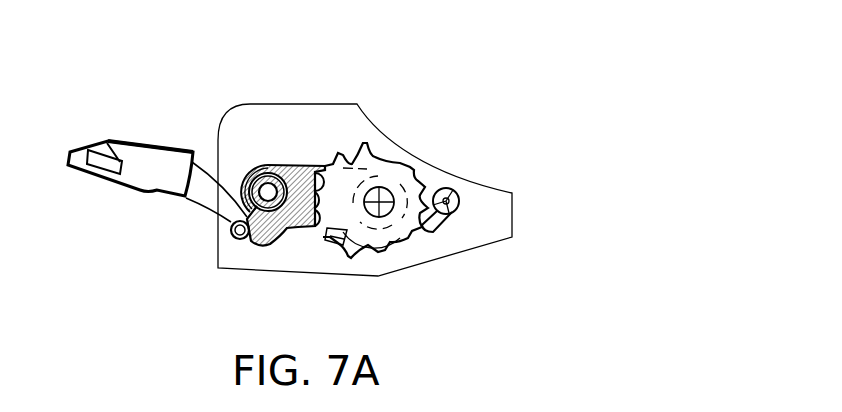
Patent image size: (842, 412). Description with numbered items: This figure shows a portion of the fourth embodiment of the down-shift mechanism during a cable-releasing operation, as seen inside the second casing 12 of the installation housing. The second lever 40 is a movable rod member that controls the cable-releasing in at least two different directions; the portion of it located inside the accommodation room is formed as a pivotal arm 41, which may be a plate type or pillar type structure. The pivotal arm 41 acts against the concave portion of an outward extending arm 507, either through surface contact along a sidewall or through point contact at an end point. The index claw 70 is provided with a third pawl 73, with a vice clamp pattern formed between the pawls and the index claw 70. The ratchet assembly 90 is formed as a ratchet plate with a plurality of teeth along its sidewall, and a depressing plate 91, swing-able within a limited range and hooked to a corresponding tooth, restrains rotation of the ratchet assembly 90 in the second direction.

The second casing 12 is at (368, 90).
The second lever 40 is at (97, 195).
The pivotal arm 41 is at (210, 198).
The index claw 70 is at (293, 173).
The third pawl 73 is at (305, 228).
The extending arm 507 is at (258, 244).
The ratchet assembly 90 is at (388, 169).
The depressing plate 91 is at (443, 220).